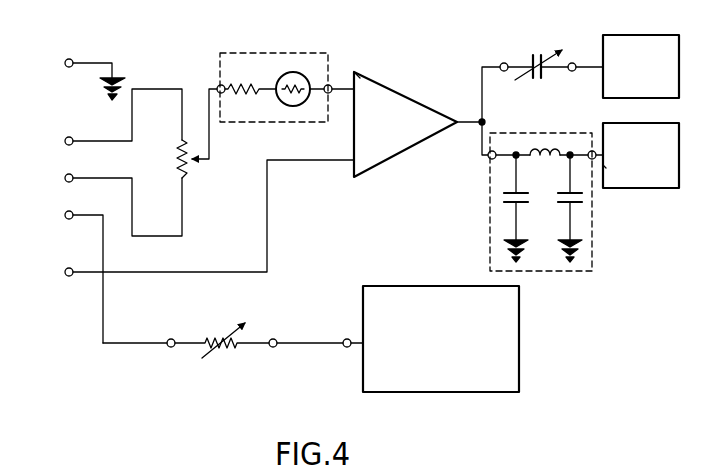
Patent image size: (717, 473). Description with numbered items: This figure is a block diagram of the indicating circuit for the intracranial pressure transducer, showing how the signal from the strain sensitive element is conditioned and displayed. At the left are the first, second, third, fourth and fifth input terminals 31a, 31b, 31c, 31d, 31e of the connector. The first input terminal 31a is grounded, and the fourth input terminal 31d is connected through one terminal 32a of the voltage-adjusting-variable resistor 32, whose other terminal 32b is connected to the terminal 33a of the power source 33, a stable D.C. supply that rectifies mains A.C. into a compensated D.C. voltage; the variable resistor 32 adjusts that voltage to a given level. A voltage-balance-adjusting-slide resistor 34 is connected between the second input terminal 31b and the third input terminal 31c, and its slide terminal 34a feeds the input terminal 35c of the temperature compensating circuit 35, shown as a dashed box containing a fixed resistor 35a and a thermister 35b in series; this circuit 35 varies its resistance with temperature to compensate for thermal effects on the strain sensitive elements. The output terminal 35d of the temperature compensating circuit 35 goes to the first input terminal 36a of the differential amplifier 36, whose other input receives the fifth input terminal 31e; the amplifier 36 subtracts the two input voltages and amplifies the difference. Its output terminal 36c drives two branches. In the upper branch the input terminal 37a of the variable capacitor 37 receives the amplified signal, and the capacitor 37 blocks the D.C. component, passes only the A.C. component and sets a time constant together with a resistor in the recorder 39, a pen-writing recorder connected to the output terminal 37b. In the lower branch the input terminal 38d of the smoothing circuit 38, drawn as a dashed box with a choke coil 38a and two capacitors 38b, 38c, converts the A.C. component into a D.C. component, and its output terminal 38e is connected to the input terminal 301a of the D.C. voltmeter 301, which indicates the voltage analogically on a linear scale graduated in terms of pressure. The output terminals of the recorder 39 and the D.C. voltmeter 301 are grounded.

The first input terminal 31a is at (64, 58).
The second input terminal 31b is at (65, 137).
The third input terminal 31c is at (65, 178).
The fourth input terminal 31d is at (65, 215).
The fifth input terminal 31e is at (65, 272).
The voltage-adjusting-variable resistor 32 is at (217, 334).
The one terminal of voltage adjusting variable resistor 32a is at (168, 346).
The other terminal of voltage adjusting variable resistor 32b is at (272, 348).
The power source 33 is at (435, 339).
The terminal of power source 33a is at (344, 339).
The voltage-balance-adjusting-slide resistor 34 is at (176, 150).
The slide terminal 34a is at (209, 164).
The temperature compensating circuit 35 is at (272, 52).
The fixed resistor 35a is at (241, 86).
The thermister 35b is at (293, 106).
The input terminal of temperature compensating circuit 35c is at (219, 86).
The output terminal of temperature compensating circuit 35d is at (330, 85).
The differential amplifier 36 is at (405, 124).
The first input terminal of differential amplifier 36a is at (358, 80).
The output terminal of differential amplifier 36c is at (481, 118).
The variable capacitor 37 is at (528, 60).
The input terminal of variable capacitor 37a is at (502, 63).
The output terminal of variable capacitor 37b is at (574, 62).
The smoothing circuit 38 is at (596, 269).
The choke coil 38a is at (533, 150).
The capacitor 38b is at (511, 199).
The capacitor 38c is at (574, 199).
The input terminal of smoothing circuit 38d is at (490, 159).
The output terminal of smoothing circuit 38e is at (591, 149).
The recorder 39 is at (641, 66).
The D.C. voltmeter 301 is at (637, 155).
The input terminal of D.C. voltmeter 301a is at (606, 168).